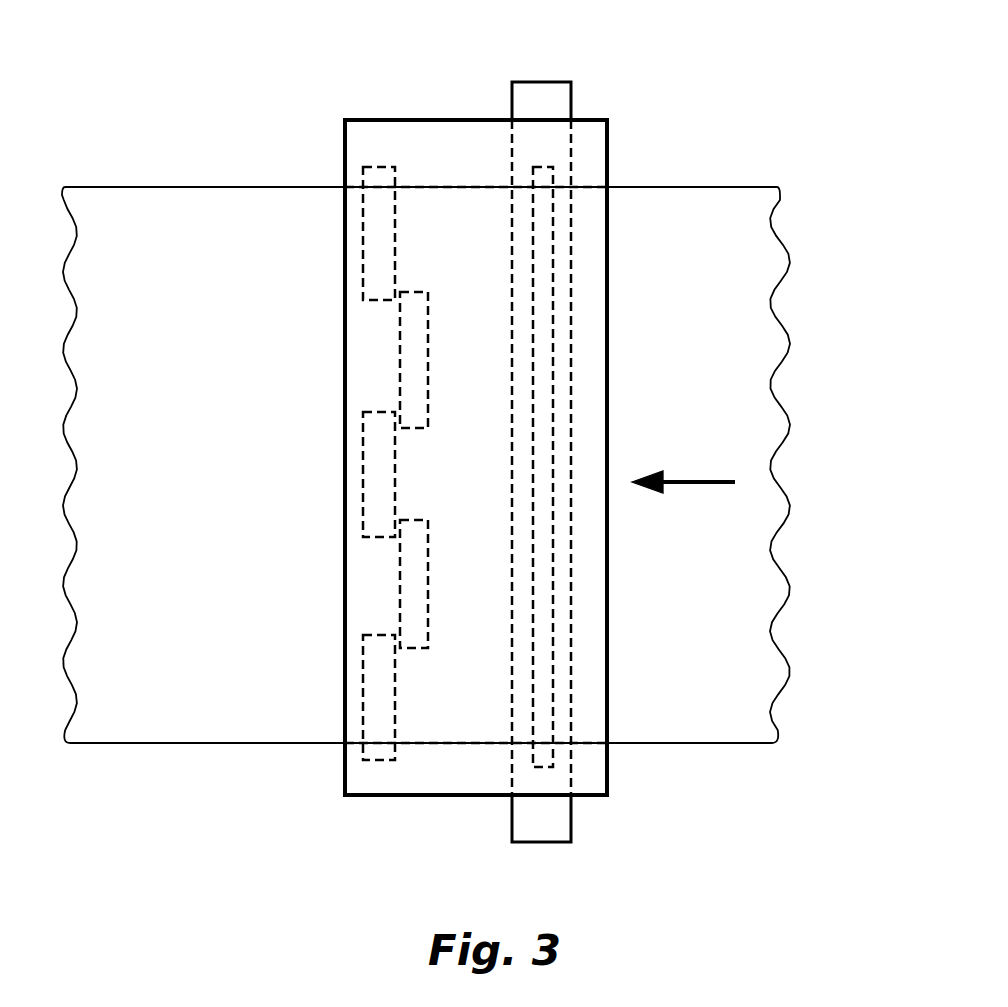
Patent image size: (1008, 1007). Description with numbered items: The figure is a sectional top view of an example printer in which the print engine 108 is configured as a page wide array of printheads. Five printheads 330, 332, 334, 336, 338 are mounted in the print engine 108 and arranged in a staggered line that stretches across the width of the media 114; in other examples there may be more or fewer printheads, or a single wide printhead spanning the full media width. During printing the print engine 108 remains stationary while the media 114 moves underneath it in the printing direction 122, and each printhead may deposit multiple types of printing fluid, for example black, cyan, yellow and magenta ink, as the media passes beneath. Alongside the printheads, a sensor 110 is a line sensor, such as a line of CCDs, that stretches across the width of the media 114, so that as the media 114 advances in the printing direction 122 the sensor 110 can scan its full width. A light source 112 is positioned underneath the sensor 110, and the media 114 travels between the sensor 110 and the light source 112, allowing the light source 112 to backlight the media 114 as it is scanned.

The print engine 108 is at (367, 118).
The sensor 110 is at (553, 618).
The light source 112 is at (572, 95).
The media 114 is at (690, 283).
The printing direction 122 is at (683, 470).
The printhead 330 is at (363, 245).
The printhead 332 is at (400, 349).
The printhead 334 is at (363, 472).
The printhead 336 is at (400, 580).
The printhead 338 is at (363, 677).